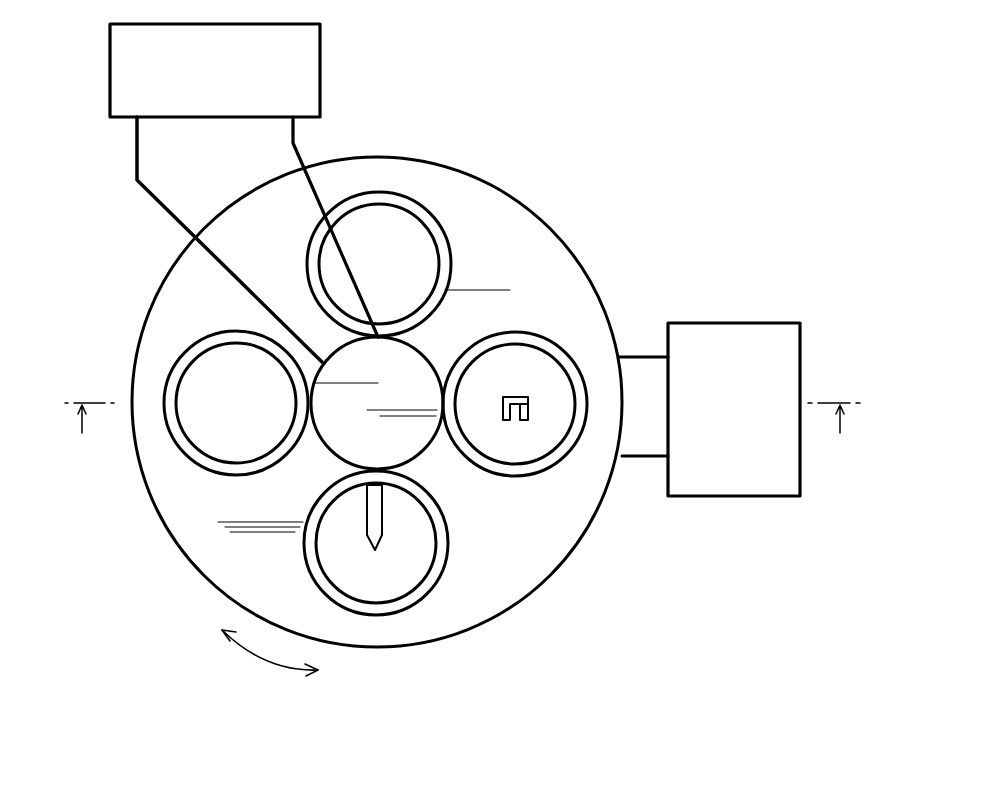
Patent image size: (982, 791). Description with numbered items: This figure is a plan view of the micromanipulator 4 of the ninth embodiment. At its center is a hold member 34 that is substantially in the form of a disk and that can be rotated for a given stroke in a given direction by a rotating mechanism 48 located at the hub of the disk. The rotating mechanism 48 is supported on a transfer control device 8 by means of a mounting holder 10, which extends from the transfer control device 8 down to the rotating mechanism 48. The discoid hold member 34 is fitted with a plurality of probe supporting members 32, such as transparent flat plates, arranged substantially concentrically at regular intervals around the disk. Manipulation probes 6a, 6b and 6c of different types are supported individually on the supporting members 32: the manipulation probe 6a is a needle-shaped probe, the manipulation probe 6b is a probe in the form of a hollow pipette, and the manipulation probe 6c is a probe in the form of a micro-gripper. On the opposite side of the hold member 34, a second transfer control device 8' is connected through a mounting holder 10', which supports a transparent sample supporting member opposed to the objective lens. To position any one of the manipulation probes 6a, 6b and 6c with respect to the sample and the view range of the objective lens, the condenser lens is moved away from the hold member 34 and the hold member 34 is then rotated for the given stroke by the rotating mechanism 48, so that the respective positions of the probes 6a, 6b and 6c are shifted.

The micromanipulator 4 is at (392, 132).
The transfer control device 8 is at (178, 70).
The transfer control device 8' is at (734, 438).
The mounting holder 10 is at (242, 239).
The mounting holder 10' is at (642, 442).
The probe supporting member 32 is at (437, 257).
The hold member 34 is at (557, 235).
The rotating mechanism 48 is at (342, 343).
The manipulation probe 6a is at (240, 406).
The manipulation probe 6b is at (370, 535).
The manipulation probe 6c is at (528, 412).